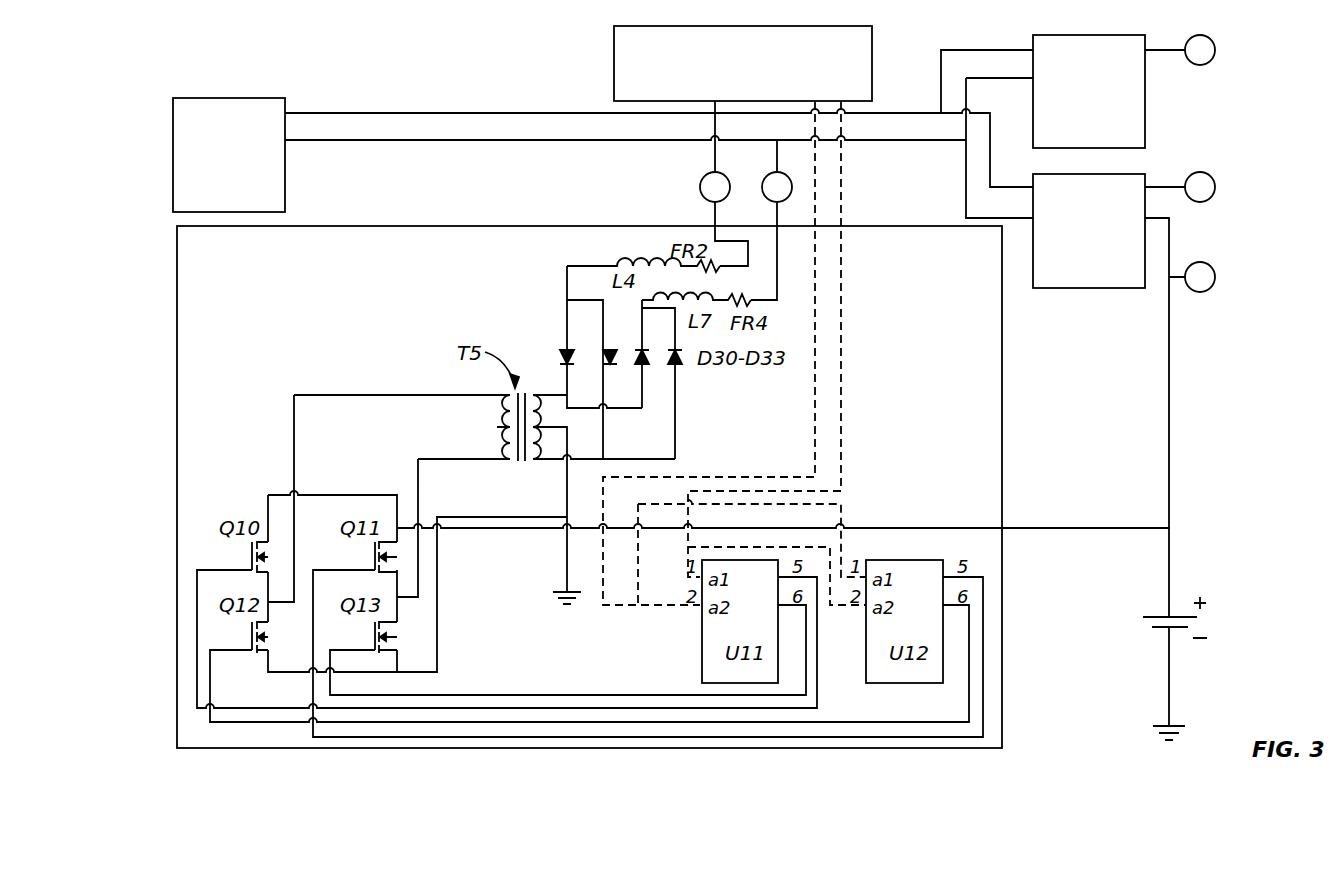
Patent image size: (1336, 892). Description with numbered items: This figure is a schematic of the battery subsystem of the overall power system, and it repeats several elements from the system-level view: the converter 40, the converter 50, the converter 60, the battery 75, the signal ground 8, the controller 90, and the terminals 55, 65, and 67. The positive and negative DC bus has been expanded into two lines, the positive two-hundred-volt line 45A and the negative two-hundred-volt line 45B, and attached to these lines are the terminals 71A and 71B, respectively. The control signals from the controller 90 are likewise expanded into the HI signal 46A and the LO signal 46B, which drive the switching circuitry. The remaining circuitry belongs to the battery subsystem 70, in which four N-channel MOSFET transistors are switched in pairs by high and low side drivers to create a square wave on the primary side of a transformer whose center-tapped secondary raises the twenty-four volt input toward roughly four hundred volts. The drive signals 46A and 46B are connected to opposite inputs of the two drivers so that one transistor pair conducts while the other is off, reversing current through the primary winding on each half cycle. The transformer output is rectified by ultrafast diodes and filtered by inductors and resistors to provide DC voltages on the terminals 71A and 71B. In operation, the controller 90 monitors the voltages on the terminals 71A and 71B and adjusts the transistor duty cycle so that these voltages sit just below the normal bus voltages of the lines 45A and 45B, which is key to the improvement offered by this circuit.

The converter 40 is at (199, 98).
The +200 VDC line 45A is at (420, 113).
The −200 VDC line 45B is at (420, 141).
The controller 90 is at (614, 58).
The converter 50 is at (1095, 35).
The terminal 55 is at (1207, 36).
The converter 60 is at (1068, 288).
The terminal 65 is at (1207, 173).
The terminal 67 is at (1207, 263).
The terminal 71A is at (700, 187).
The terminal 71B is at (762, 188).
The HI signal 46A is at (815, 440).
The LO signal 46B is at (843, 438).
The battery subsystem 70 is at (243, 748).
The battery 75 is at (1160, 617).
The signal ground 8 is at (560, 591).